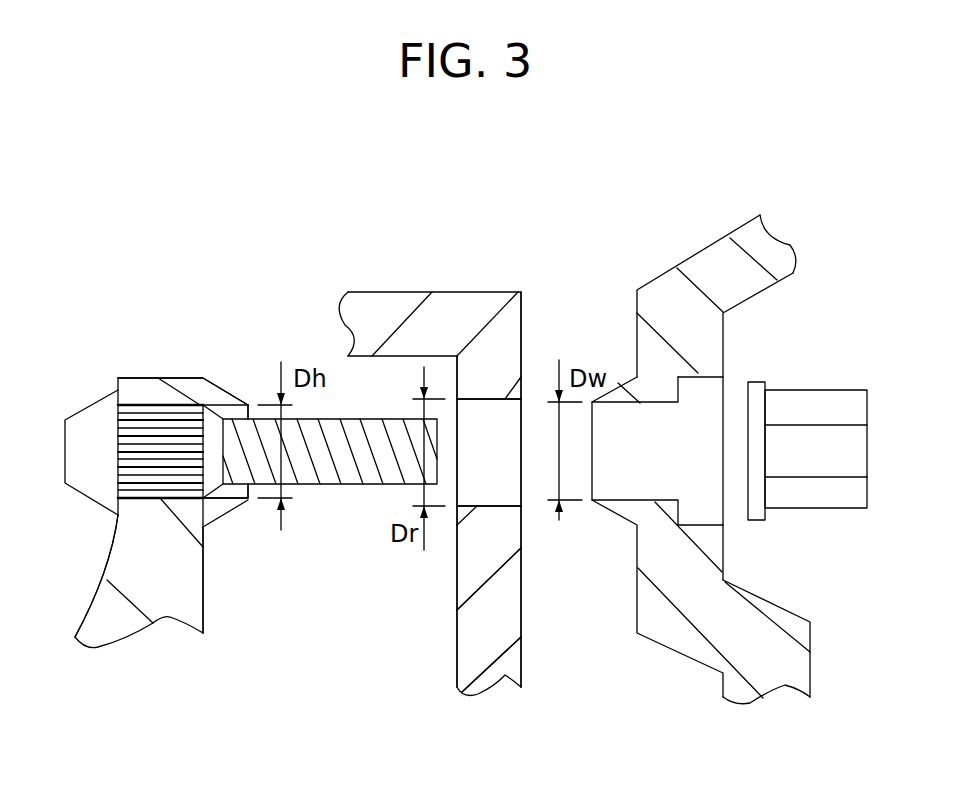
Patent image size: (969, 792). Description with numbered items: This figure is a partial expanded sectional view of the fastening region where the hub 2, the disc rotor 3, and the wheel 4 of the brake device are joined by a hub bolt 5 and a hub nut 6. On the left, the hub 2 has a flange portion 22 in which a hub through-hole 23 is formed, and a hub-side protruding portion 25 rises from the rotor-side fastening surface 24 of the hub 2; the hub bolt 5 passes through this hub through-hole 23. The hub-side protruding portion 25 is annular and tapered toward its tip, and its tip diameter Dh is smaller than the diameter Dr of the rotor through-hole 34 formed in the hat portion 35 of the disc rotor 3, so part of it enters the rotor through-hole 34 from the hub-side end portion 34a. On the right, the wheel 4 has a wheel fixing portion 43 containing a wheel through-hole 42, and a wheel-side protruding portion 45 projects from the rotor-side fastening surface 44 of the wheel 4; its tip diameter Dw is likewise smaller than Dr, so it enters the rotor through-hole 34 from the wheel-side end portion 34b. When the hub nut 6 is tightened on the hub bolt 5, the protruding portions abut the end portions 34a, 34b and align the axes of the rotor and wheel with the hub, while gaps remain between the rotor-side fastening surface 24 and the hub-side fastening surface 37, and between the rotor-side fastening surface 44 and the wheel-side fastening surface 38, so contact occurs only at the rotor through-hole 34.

The hub 2 is at (84, 610).
The flange portion 22 is at (133, 552).
The hub through-hole 23 is at (232, 492).
The rotor-side fastening surface 24 is at (203, 600).
The hub-side protruding portion 25 is at (227, 397).
The hub bolt 5 is at (84, 452).
The disc rotor 3 is at (405, 292).
The rotor through-hole 34 is at (488, 420).
The hub-side end portion 34a is at (457, 400).
The wheel-side end portion 34b is at (521, 506).
The hat portion 35 is at (493, 632).
The hub-side fastening surface 37 is at (457, 594).
The wheel-side fastening surface 38 is at (521, 594).
The wheel 4 is at (699, 253).
The wheel through-hole 42 is at (615, 478).
The wheel fixing portion 43 is at (695, 553).
The rotor-side fastening surface 44 is at (635, 608).
The wheel-side protruding portion 45 is at (620, 397).
The hub nut 6 is at (813, 389).